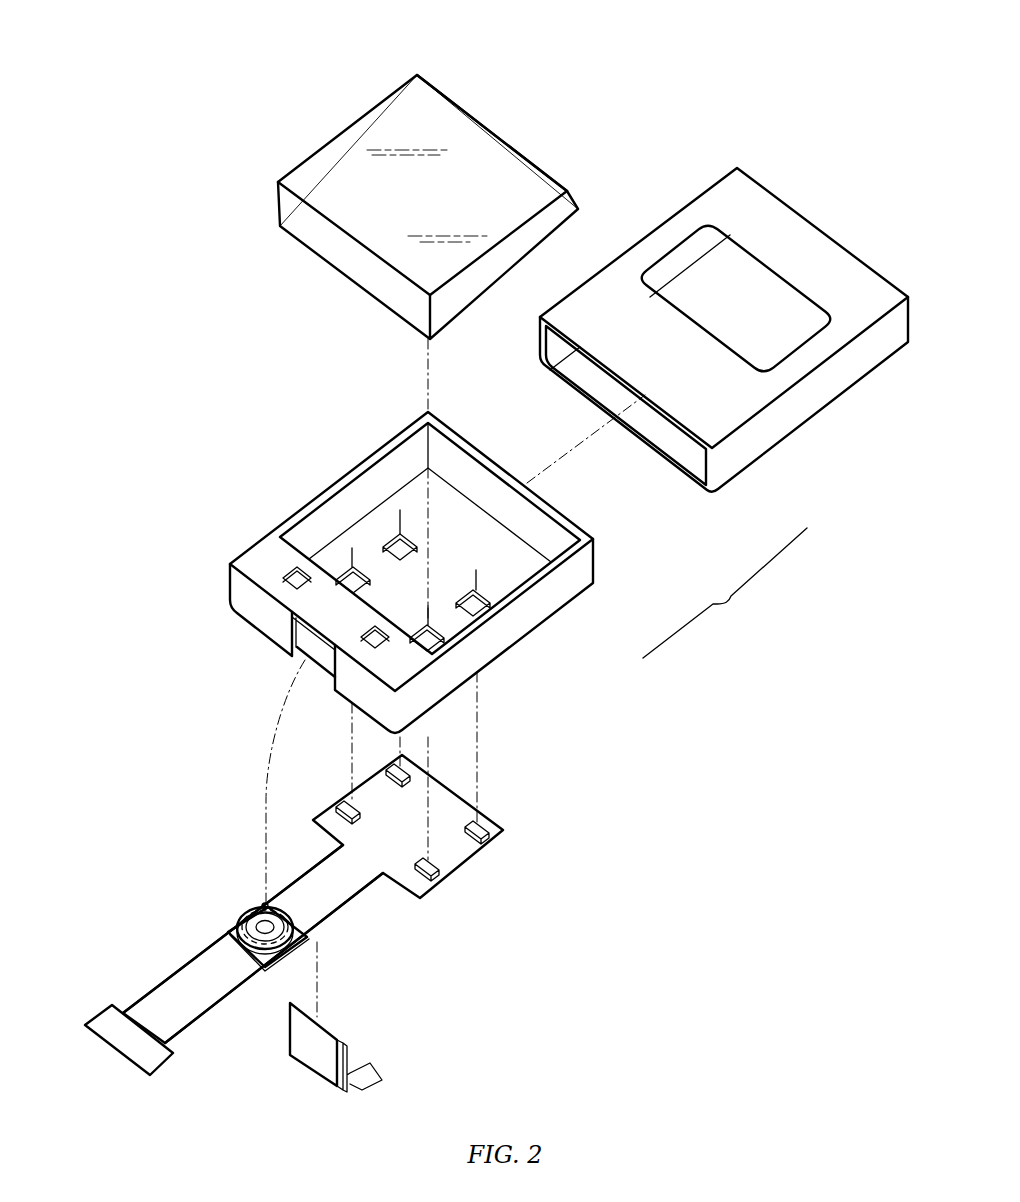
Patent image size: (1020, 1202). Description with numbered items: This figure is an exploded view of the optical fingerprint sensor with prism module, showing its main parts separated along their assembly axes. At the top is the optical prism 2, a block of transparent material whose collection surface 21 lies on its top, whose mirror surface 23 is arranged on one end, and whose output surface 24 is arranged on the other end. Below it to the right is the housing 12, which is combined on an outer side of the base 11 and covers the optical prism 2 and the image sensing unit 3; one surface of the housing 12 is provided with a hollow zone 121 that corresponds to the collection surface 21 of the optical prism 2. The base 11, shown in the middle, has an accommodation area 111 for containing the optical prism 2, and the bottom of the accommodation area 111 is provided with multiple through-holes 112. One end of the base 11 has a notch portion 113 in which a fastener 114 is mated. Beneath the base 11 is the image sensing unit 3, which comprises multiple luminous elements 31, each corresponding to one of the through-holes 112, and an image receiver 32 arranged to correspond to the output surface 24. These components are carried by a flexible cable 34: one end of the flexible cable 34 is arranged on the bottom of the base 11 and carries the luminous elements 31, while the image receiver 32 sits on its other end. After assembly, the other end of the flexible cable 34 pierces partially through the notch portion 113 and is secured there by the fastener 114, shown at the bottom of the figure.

The optical prism 2 is at (413, 171).
The collection surface 21 is at (330, 160).
The mirror surface 23 is at (487, 128).
The output surface 24 is at (325, 243).
The housing 12 is at (724, 354).
The hollow zone 121 is at (759, 278).
The base 11 is at (433, 572).
The accommodation area 111 is at (366, 498).
The through-holes 112 is at (483, 598).
The notch portion 113 is at (290, 642).
The image sensing unit 3 is at (309, 909).
The luminous elements 31 is at (348, 806).
The image receiver 32 is at (253, 920).
The flexible cable 34 is at (335, 918).
The fastener 114 is at (315, 1065).